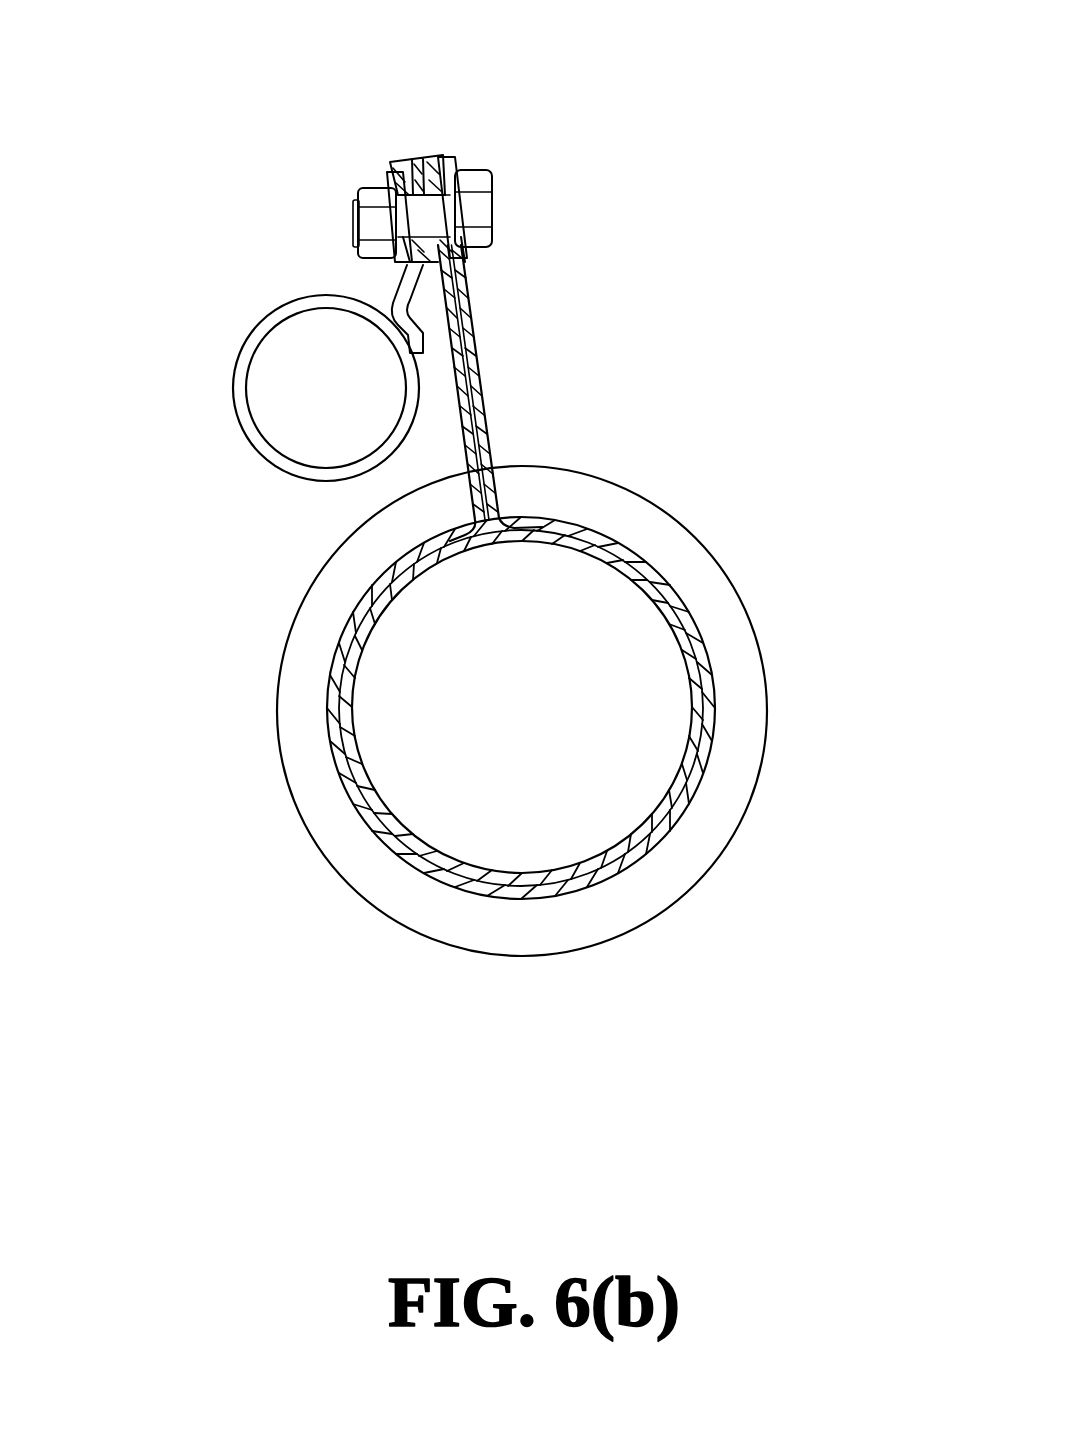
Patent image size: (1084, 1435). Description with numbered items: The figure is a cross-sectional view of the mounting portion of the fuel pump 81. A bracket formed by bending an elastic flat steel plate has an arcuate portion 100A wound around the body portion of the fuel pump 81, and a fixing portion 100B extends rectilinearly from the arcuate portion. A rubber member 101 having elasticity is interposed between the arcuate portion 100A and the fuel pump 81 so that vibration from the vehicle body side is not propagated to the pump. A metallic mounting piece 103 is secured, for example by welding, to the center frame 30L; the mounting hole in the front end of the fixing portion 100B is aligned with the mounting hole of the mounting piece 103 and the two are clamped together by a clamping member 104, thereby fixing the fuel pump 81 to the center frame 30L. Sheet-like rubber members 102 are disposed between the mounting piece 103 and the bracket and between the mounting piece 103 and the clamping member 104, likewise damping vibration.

The fuel pump 81 is at (718, 853).
The arcuate portion 100A is at (447, 886).
The fixing portions 100B is at (481, 368).
The rubber member 101 is at (687, 618).
The sheet-like rubber members 102 is at (397, 160).
The metallic mounting piece 103 is at (400, 300).
The clamping member 104 is at (482, 208).
The center frame 30L is at (233, 352).